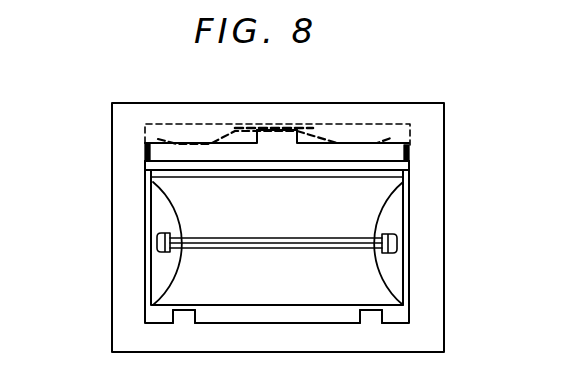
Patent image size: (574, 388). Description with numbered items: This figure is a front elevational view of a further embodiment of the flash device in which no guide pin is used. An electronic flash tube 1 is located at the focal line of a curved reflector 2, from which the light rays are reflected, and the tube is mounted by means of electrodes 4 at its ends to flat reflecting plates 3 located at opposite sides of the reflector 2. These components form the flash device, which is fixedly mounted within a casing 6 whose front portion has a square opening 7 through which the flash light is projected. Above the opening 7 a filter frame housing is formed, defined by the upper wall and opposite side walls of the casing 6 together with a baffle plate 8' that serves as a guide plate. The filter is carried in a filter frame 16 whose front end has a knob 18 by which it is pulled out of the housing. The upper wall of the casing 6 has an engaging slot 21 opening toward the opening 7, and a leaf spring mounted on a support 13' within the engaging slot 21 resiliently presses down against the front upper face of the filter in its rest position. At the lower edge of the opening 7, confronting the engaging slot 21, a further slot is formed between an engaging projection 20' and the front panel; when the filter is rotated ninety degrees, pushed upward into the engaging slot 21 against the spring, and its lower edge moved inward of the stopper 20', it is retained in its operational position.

The electronic flash tube 1 is at (282, 255).
The curved reflector 2 is at (320, 300).
The flat reflecting plates 3 is at (158, 275).
The electrodes 4 is at (157, 240).
The casing 6 is at (434, 125).
The square opening 7 is at (152, 198).
The baffle plate 8' is at (311, 167).
The support 13' is at (274, 100).
The filter frame 16 is at (368, 157).
The knob 18 is at (287, 135).
The engaging projection 20' is at (283, 349).
The engaging slot 21 is at (177, 130).